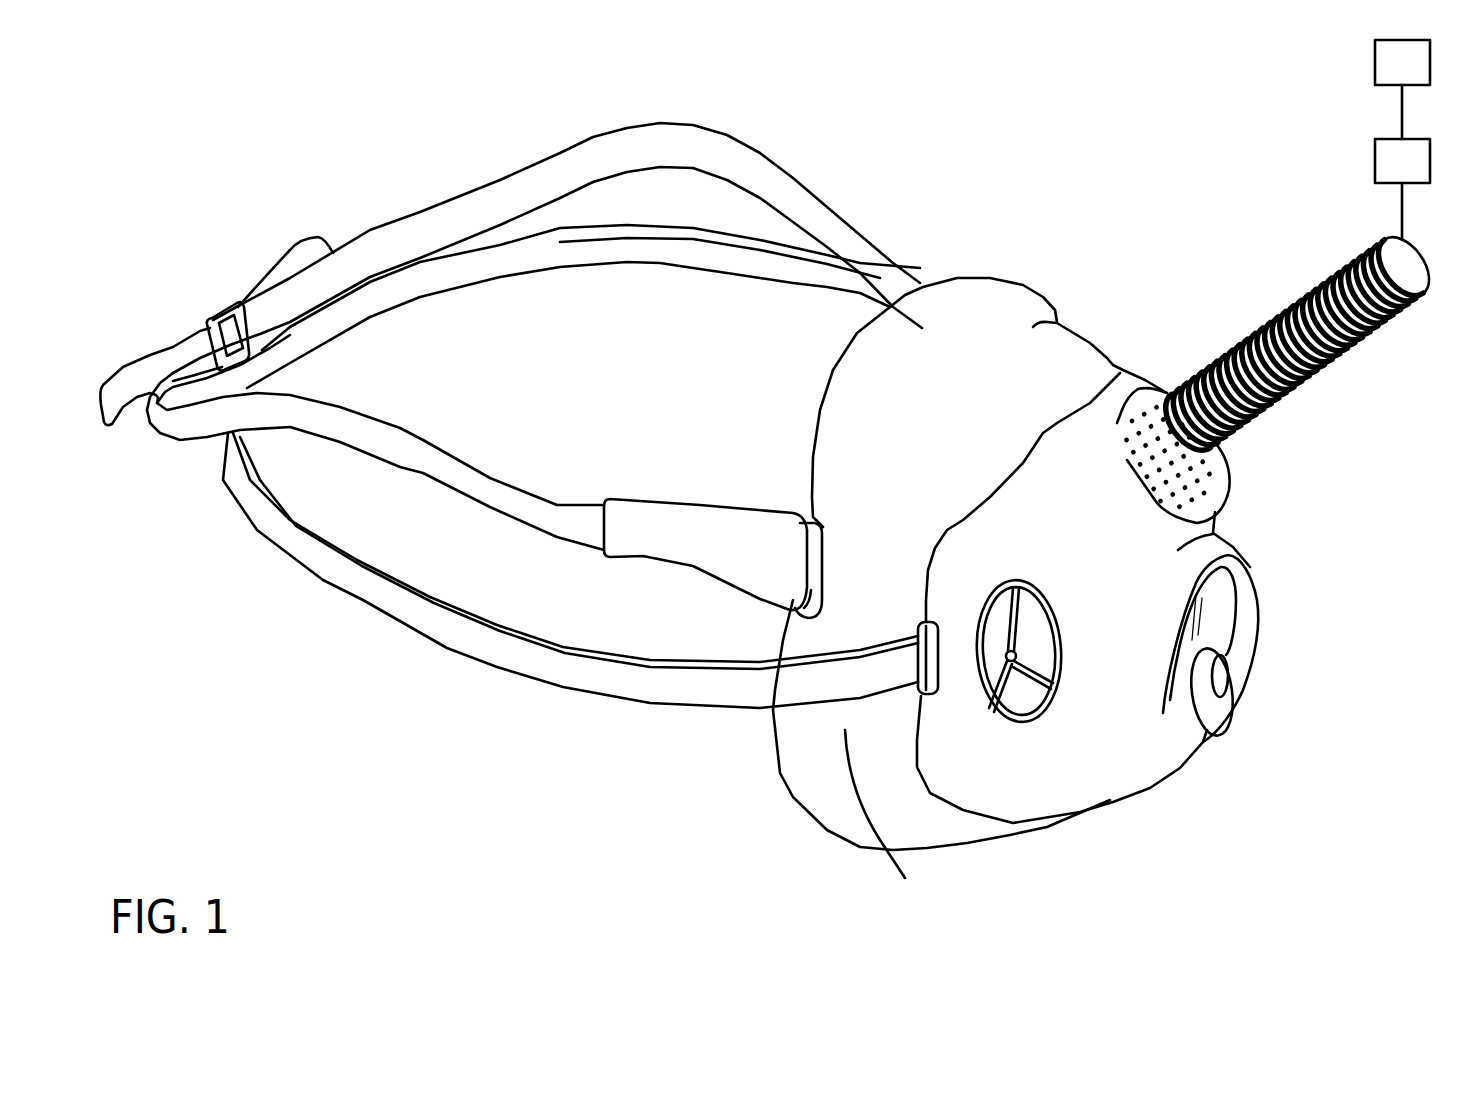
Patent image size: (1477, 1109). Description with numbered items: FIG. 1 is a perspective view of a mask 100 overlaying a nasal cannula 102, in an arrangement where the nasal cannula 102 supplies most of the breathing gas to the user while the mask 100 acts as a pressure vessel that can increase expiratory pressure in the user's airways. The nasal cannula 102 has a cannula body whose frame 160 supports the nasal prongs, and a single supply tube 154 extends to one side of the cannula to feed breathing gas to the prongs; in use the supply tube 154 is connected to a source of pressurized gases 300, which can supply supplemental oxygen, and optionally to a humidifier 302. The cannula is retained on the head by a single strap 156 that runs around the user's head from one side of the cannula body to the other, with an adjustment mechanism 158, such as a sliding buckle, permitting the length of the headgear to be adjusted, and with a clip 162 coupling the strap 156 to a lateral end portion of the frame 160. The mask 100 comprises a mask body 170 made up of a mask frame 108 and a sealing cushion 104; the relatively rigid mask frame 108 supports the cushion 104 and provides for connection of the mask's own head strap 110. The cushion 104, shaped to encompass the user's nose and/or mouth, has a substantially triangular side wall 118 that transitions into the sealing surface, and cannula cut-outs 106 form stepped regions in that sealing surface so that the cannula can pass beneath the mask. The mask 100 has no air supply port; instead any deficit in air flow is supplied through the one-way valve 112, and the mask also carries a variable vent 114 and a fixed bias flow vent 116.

The mask 100 is at (1059, 299).
The nasal cannula 102 is at (414, 176).
The sealing cushion 104 is at (792, 790).
The cannula cut-outs 106 is at (822, 520).
The mask frame 108 is at (1213, 536).
The head strap 110 is at (445, 648).
The one-way valve 112 is at (1018, 705).
The variable vent 114 is at (1252, 650).
The fixed bias flow vent 116 is at (1220, 479).
The side wall 118 is at (899, 823).
The supply tube 154 is at (1338, 356).
The strap 156 is at (768, 153).
The adjustment mechanism 158 is at (210, 304).
The frame 160 is at (807, 608).
The clip 162 is at (698, 568).
The mask body 170 is at (1134, 368).
The source of pressurized gases 300 is at (1430, 62).
The humidifier 302 is at (1430, 160).